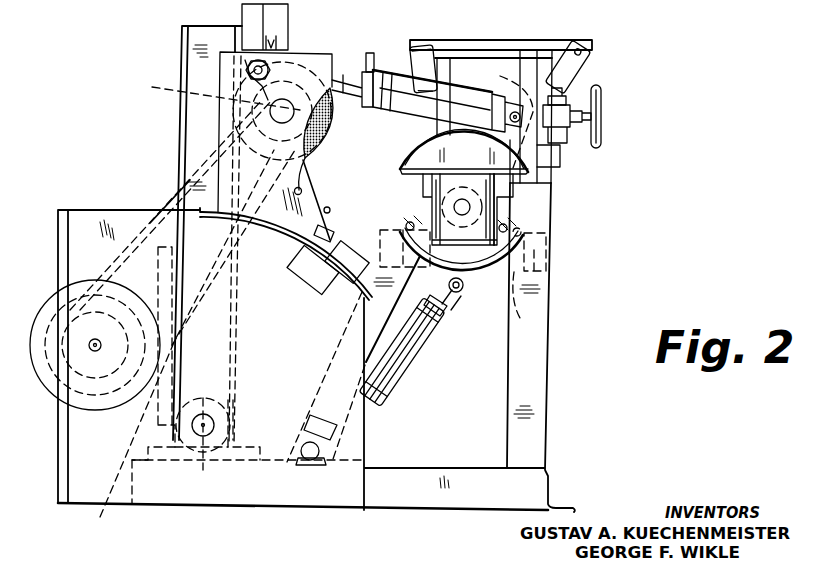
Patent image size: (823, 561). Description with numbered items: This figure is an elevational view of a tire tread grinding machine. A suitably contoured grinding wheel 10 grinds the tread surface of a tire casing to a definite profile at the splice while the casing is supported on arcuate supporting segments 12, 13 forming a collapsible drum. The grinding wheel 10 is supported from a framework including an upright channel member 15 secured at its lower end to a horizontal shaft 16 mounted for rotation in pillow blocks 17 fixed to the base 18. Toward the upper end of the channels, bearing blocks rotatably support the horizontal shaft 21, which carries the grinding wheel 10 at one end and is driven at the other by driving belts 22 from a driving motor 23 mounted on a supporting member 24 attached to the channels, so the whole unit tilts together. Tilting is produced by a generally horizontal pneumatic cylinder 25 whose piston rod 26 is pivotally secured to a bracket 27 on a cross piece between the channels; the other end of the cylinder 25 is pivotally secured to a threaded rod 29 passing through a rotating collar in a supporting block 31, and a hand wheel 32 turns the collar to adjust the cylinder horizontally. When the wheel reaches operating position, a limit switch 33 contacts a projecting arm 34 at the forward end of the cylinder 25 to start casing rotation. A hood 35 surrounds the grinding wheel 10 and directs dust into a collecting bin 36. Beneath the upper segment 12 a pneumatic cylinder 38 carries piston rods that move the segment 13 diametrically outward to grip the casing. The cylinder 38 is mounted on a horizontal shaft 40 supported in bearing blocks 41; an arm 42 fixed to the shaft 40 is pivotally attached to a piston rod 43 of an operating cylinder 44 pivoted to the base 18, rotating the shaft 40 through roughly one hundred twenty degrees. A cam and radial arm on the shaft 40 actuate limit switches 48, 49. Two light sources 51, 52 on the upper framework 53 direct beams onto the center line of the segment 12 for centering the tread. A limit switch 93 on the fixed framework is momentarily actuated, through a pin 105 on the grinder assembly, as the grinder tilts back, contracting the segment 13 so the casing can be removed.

The grinding wheel 10 is at (333, 123).
The upper arcuate supporting segment 12 is at (530, 162).
The arcuate supporting segment 13 is at (507, 237).
The upright channel member 15 is at (195, 34).
The horizontal shaft 16 is at (203, 455).
The pillow block 17 is at (190, 347).
The base 18 is at (452, 500).
The horizontal shaft 21 is at (214, 93).
The driving belts 22 is at (165, 185).
The driving motor 23 is at (43, 380).
The supporting member 24 is at (146, 440).
The pneumatic cylinder 25 is at (393, 118).
The piston rod 26 is at (340, 78).
The bracket 27 is at (275, 50).
The threaded rod 29 is at (510, 88).
The supporting block 31 is at (563, 110).
The hand wheel 32 is at (602, 108).
The limit switch 33 is at (290, 20).
The projecting arm 34 is at (370, 53).
The hood 35 is at (225, 113).
The collecting bin 36 is at (103, 187).
The pneumatic cylinder 38 is at (440, 205).
The horizontal shaft 40 is at (503, 215).
The bearing blocks 41 is at (495, 208).
The arm 42 is at (461, 289).
The piston rod 43 is at (448, 306).
The operating cylinder 44 is at (414, 357).
The limit switch 48 is at (529, 284).
The limit switch 49 is at (396, 282).
The light source 51 is at (434, 48).
The light source 52 is at (572, 46).
The upper framework 53 is at (502, 40).
The limit switch 93 is at (332, 238).
The pin 105 is at (311, 178).